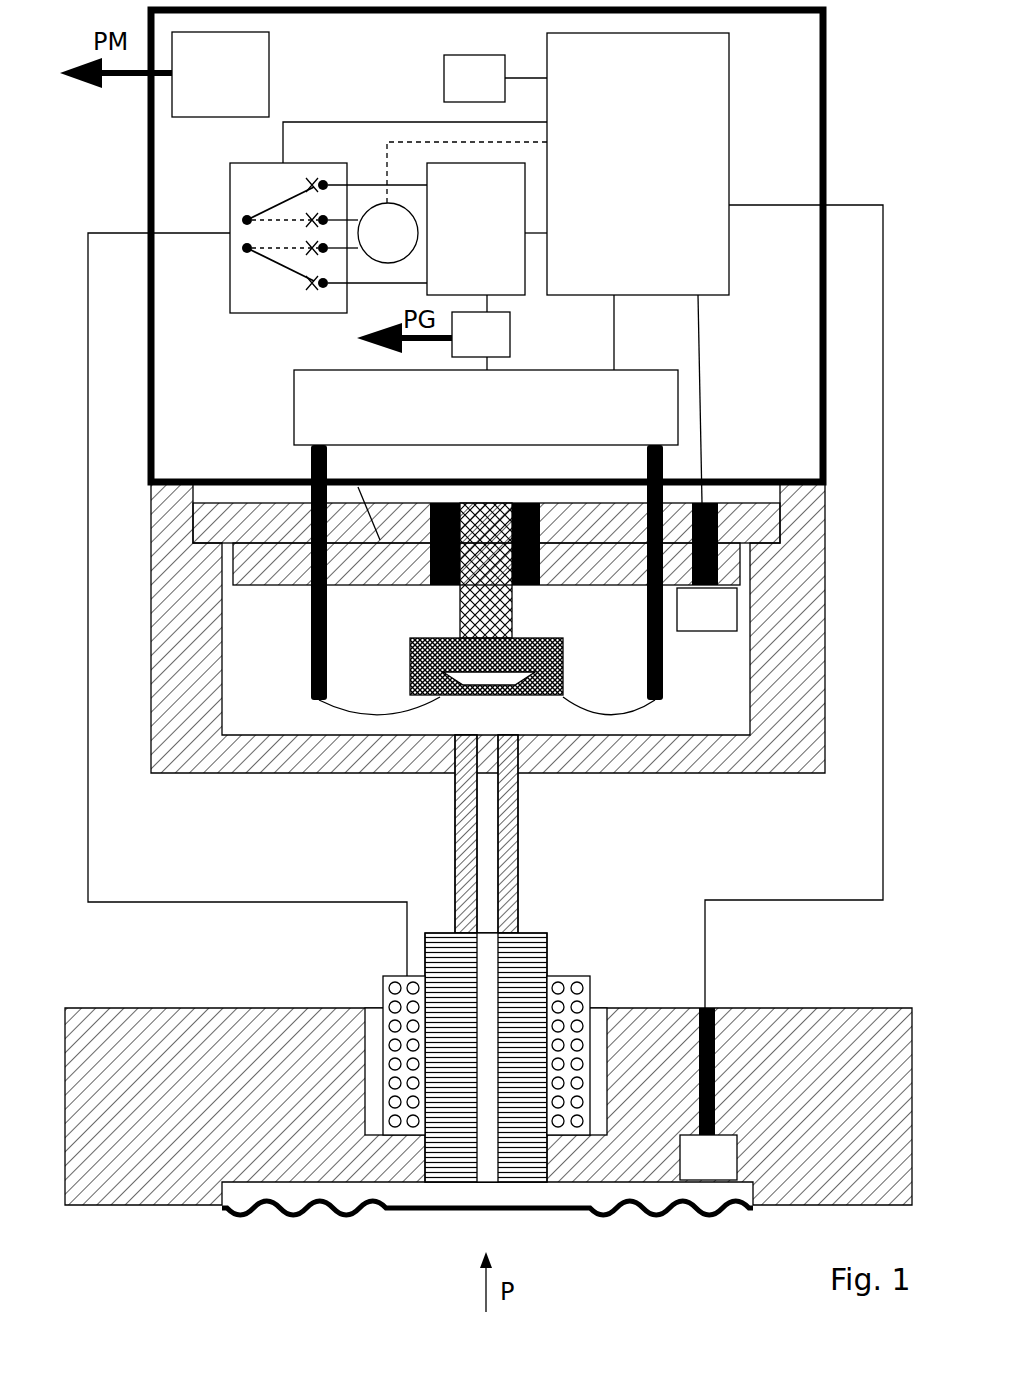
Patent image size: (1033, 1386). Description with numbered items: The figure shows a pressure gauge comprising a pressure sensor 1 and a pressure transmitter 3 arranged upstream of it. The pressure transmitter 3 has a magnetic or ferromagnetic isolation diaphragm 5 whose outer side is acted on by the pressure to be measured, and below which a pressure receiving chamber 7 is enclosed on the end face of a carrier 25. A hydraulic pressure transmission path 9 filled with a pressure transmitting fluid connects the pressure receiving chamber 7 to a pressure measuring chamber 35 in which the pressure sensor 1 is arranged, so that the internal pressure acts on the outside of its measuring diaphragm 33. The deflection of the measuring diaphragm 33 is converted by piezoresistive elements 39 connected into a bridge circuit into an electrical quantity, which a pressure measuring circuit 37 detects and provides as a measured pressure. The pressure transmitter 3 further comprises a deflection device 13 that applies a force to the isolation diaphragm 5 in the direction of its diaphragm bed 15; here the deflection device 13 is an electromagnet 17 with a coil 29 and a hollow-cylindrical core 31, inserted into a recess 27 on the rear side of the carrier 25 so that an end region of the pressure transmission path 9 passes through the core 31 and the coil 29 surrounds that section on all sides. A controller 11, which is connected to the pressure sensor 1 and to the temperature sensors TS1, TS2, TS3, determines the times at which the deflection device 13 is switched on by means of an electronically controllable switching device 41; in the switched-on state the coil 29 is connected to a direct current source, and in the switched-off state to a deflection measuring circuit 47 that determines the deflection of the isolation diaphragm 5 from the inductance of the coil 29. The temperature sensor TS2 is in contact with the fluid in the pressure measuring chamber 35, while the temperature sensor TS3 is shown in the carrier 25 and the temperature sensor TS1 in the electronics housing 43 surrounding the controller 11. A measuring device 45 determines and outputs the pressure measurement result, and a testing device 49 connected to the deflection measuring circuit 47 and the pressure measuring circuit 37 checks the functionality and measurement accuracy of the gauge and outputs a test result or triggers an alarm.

The pressure sensor 1 is at (585, 693).
The pressure transmitter 3 is at (172, 1000).
The isolation diaphragm 5 is at (547, 1208).
The pressure receiving chamber 7 is at (610, 1190).
The hydraulic pressure transmission path 9 is at (483, 827).
The controller 11 is at (652, 177).
The deflection device 13 is at (328, 1039).
The electromagnet 17 is at (373, 1050).
The diaphragm bed 15 is at (408, 1180).
The carrier 25 is at (826, 1040).
The recess 27 is at (597, 1063).
The coil 29 is at (577, 1018).
The core 31 is at (518, 972).
The measuring diaphragm 33 is at (473, 693).
The pressure measuring chamber 35 is at (292, 664).
The pressure measuring circuit 37 is at (517, 421).
The piezoresistive elements 39 is at (433, 698).
The switching device 41 is at (275, 315).
The electronics housing 43 is at (827, 148).
The measuring device 45 is at (236, 86).
The deflection measuring circuit 47 is at (492, 246).
The testing device 49 is at (498, 347).
The temperature sensor TS1 is at (498, 90).
The temperature sensor TS2 is at (730, 622).
The temperature sensor TS3 is at (730, 1171).